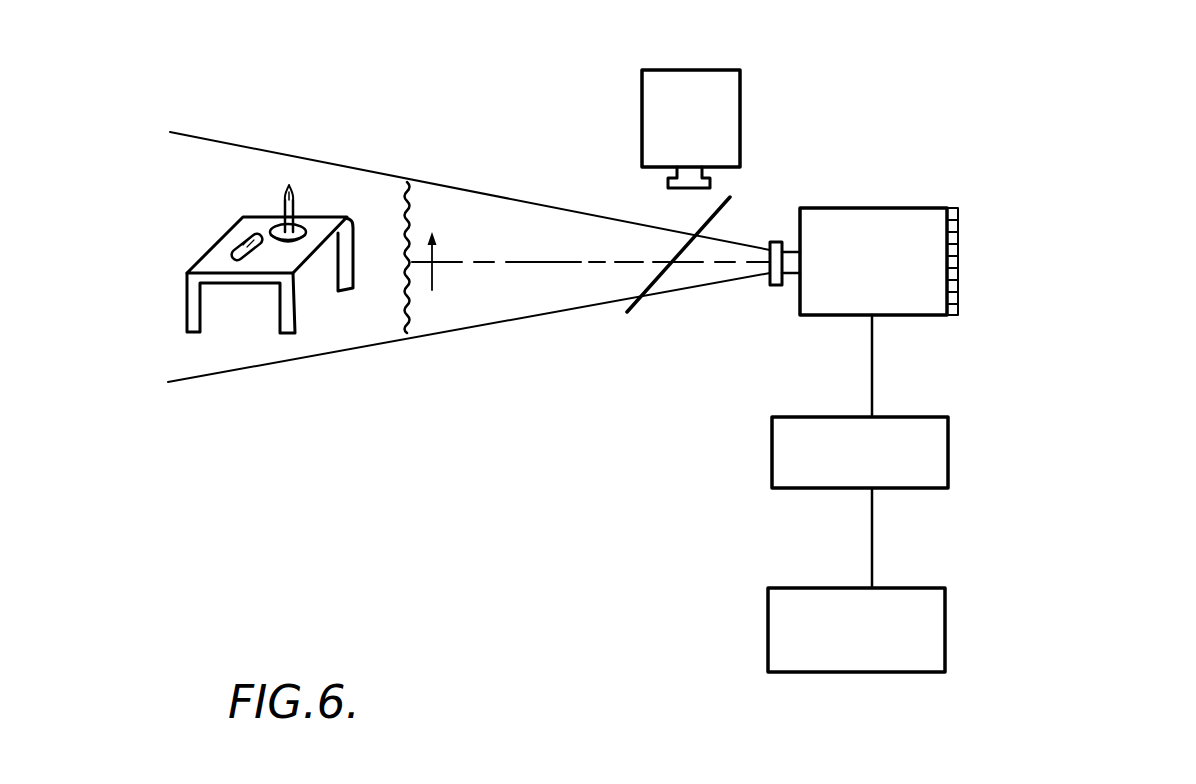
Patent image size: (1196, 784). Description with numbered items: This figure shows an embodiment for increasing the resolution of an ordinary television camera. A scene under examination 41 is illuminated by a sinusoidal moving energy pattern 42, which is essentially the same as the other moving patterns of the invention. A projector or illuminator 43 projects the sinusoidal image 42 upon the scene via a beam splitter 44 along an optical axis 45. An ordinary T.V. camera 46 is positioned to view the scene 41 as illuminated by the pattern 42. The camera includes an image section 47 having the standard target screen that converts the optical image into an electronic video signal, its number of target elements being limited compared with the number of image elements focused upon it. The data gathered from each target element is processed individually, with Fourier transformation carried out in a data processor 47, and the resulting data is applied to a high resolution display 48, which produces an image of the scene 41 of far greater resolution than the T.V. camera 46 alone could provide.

The scene under examination 41 is at (290, 334).
The sinusoidal moving energy pattern 42 is at (408, 200).
The illuminator 43 is at (703, 70).
The beam splitter 44 is at (632, 306).
The optical axis 45 is at (530, 262).
The T.V. camera 46 is at (845, 207).
The image section 47 is at (958, 233).
The high resolution display 48 is at (945, 620).